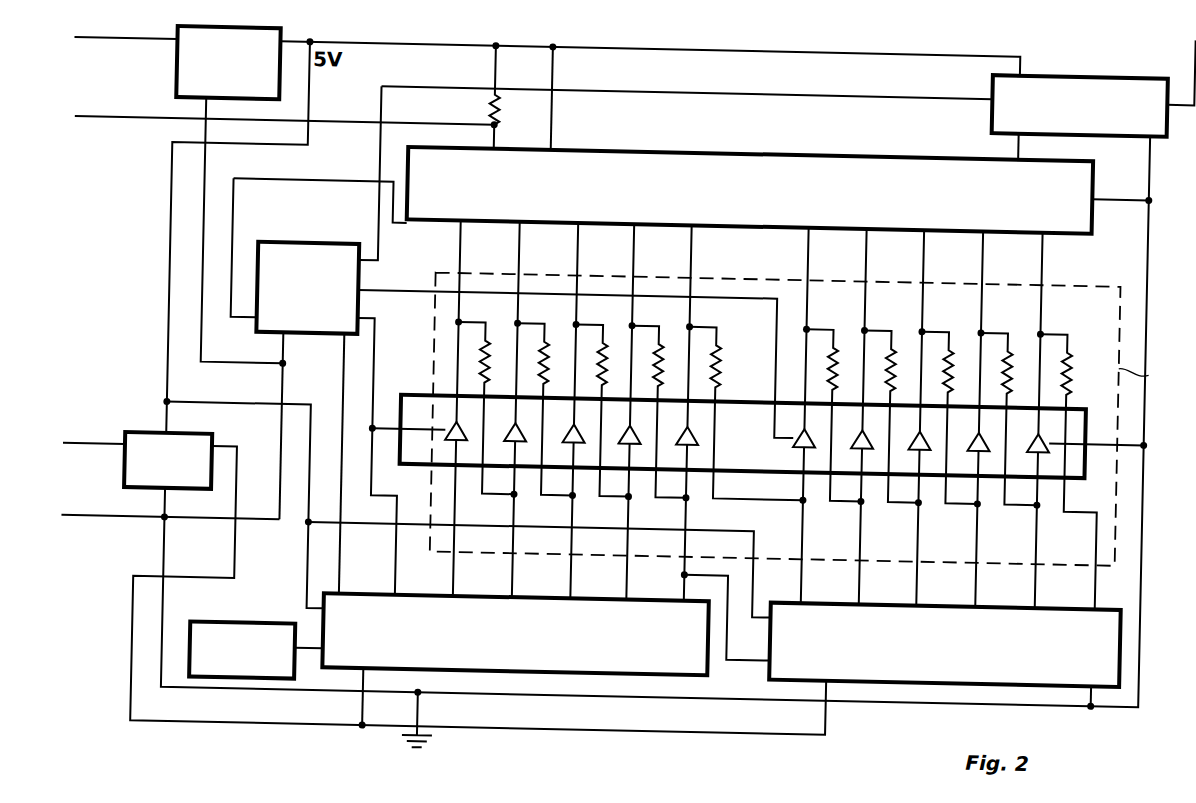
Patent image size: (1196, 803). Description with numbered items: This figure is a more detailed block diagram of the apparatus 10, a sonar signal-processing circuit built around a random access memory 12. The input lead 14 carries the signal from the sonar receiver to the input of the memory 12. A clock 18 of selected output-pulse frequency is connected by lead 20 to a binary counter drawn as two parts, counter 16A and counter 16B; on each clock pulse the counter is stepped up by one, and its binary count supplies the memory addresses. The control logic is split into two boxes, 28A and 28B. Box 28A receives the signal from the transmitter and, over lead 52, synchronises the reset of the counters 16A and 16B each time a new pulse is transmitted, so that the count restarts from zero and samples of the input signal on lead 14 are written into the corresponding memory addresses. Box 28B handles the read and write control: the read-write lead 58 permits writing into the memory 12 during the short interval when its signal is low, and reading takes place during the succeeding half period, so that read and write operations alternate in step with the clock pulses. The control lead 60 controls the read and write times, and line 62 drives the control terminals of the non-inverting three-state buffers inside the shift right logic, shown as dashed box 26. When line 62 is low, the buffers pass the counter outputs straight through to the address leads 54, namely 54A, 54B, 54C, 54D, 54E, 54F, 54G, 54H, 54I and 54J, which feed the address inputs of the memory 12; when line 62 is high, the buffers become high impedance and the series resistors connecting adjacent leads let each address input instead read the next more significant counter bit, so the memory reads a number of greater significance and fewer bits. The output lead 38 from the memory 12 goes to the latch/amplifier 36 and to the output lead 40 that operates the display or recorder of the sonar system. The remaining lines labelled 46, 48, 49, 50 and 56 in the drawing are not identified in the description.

The apparatus 10 is at (669, 45).
The random access memory 12 is at (665, 151).
The input signal line 14 is at (331, 127).
The counter 16A is at (536, 673).
The counter 16B is at (966, 676).
The clock 18 is at (250, 630).
The lead 20 is at (313, 657).
The shift right logic 26 is at (1118, 404).
The control logic box 28A is at (151, 442).
The control logic box 28B is at (297, 249).
The latch/amplifier 36 is at (1014, 67).
The output lead 38 is at (1008, 137).
The output lead 40 is at (1183, 62).
The power supply 46 is at (273, 39).
The power/ground line 48 is at (200, 308).
The 5V supply line 49 is at (167, 245).
The start circuit 50 is at (92, 454).
The lead 52 is at (238, 538).
The address leads 54 is at (455, 257).
The lead 54A is at (457, 265).
The lead 54B is at (516, 265).
The lead 54C is at (574, 265).
The lead 54D is at (630, 265).
The lead 54E is at (688, 265).
The lead 54F is at (805, 265).
The lead 54G is at (863, 265).
The lead 54H is at (920, 265).
The lead 54I is at (980, 265).
The lead 54J is at (1039, 265).
The read/write control line 56 is at (873, 91).
The read-write lead 58 is at (357, 186).
The control lead 60 is at (373, 333).
The control line 62 is at (391, 424).